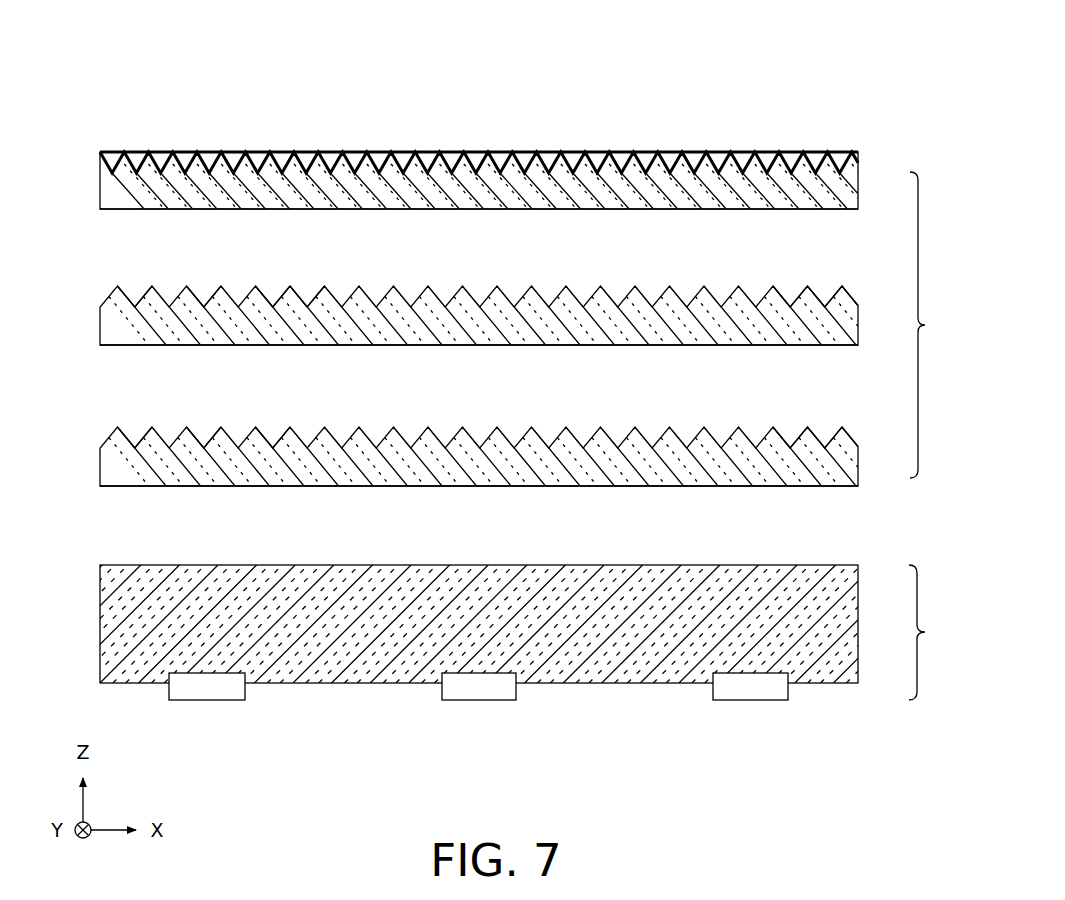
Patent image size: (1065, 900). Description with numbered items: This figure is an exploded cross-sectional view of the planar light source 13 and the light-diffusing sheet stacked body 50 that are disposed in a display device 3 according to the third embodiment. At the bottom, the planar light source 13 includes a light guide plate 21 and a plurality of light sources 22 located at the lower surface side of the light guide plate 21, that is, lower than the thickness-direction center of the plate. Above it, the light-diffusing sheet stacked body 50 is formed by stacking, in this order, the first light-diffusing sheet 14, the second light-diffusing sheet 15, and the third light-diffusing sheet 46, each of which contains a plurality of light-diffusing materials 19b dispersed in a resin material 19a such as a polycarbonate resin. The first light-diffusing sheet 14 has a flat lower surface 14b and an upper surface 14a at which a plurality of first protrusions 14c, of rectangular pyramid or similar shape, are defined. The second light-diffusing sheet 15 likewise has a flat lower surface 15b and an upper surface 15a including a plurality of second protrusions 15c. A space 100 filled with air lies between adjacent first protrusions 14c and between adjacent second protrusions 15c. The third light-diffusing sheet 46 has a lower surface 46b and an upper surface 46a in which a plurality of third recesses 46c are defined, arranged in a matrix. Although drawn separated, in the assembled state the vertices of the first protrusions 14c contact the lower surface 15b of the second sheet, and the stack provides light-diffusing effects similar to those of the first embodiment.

The display device 3 is at (864, 68).
The planar light source 13 is at (482, 660).
The first light-diffusing sheet 14 is at (504, 454).
The upper surface 14a is at (818, 431).
The lower surface 14b is at (545, 487).
The first protrusions 14c is at (160, 442).
The second light-diffusing sheet 15 is at (504, 343).
The upper surface 15a is at (818, 290).
The lower surface 15b is at (638, 346).
The second protrusions 15c is at (162, 302).
The resin material 19a is at (104, 185).
The light-diffusing materials 19b is at (110, 200).
The light guide plate 21 is at (355, 648).
The light sources 22 is at (205, 687).
The third light-diffusing sheet 46 is at (474, 297).
The upper surface 46a is at (497, 150).
The lower surface 46b is at (497, 210).
The third recesses 46c is at (192, 165).
The light-diffusing sheet stacked body 50 is at (931, 325).
The space 100 is at (273, 296).